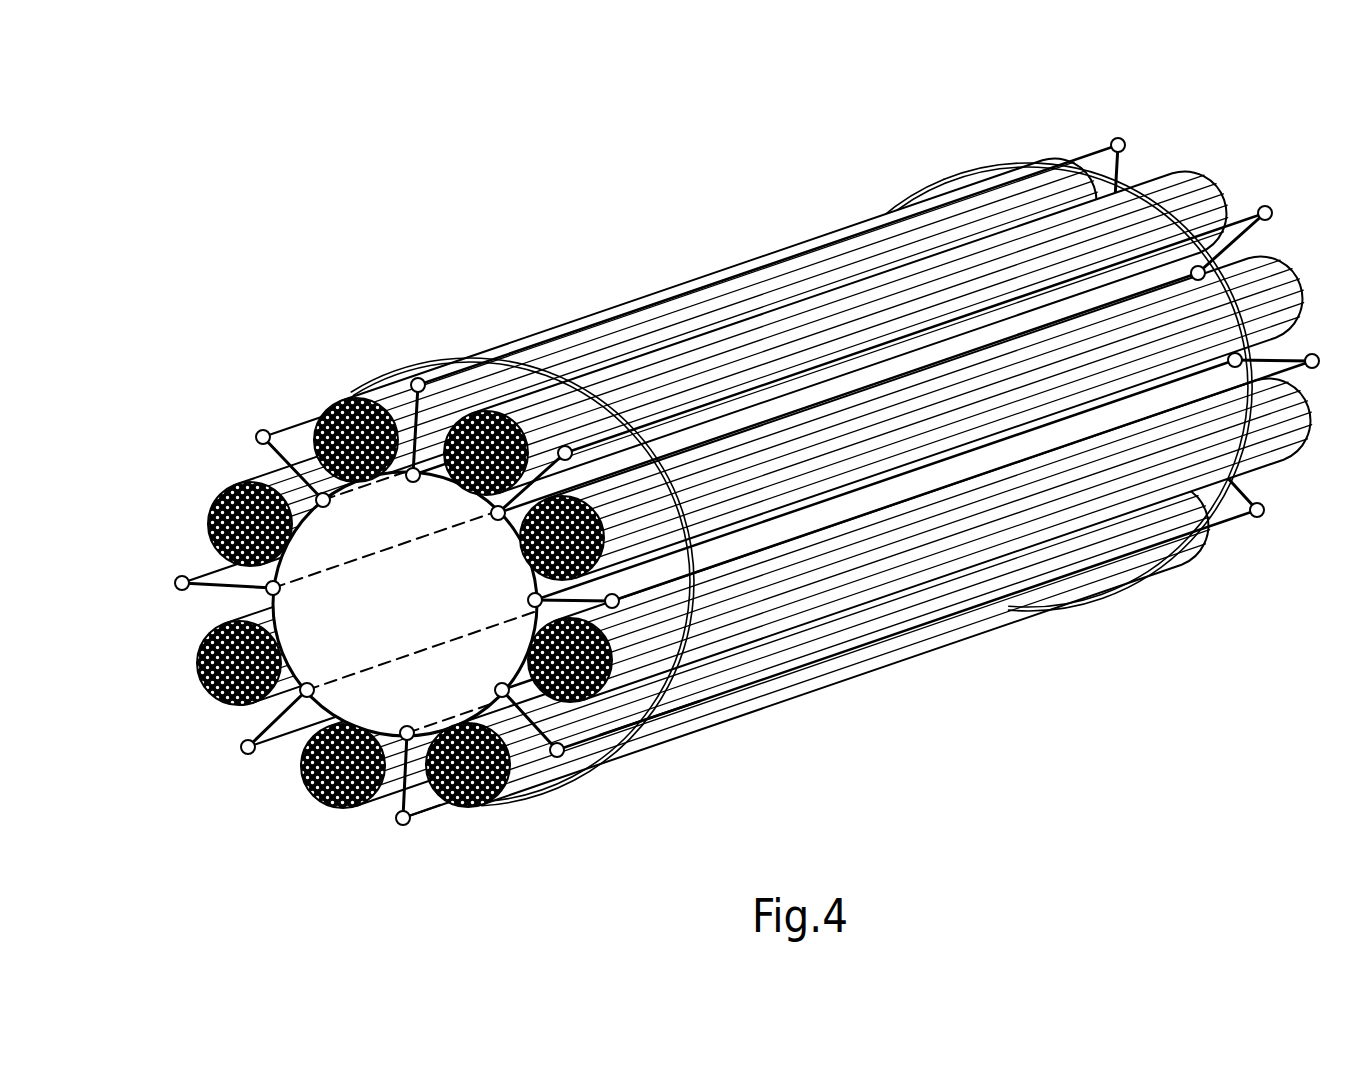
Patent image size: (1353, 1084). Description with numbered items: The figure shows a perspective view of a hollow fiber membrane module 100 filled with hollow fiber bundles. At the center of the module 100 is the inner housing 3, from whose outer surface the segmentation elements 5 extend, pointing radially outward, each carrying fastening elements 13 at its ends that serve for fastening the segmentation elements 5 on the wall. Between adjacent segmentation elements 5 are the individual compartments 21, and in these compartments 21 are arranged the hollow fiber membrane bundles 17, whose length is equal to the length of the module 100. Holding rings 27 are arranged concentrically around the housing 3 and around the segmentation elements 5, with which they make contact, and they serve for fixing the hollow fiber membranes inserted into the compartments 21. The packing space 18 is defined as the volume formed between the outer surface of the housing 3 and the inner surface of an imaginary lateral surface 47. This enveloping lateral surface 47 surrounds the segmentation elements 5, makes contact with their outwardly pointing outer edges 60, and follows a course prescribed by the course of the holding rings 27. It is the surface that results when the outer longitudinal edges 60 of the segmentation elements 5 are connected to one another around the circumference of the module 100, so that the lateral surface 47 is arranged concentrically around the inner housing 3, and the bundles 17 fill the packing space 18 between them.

The module 100 is at (693, 514).
The housing 3 is at (322, 716).
The fastening elements 13 is at (260, 477).
The hollow fiber membrane bundles 17 is at (463, 810).
The packing space 18 is at (272, 706).
The compartments 21 is at (216, 593).
The segmentation elements 5 is at (421, 816).
The imaginary lateral surface 47 is at (456, 363).
The holding rings 27 is at (1155, 206).
The outer edges 60 is at (845, 355).